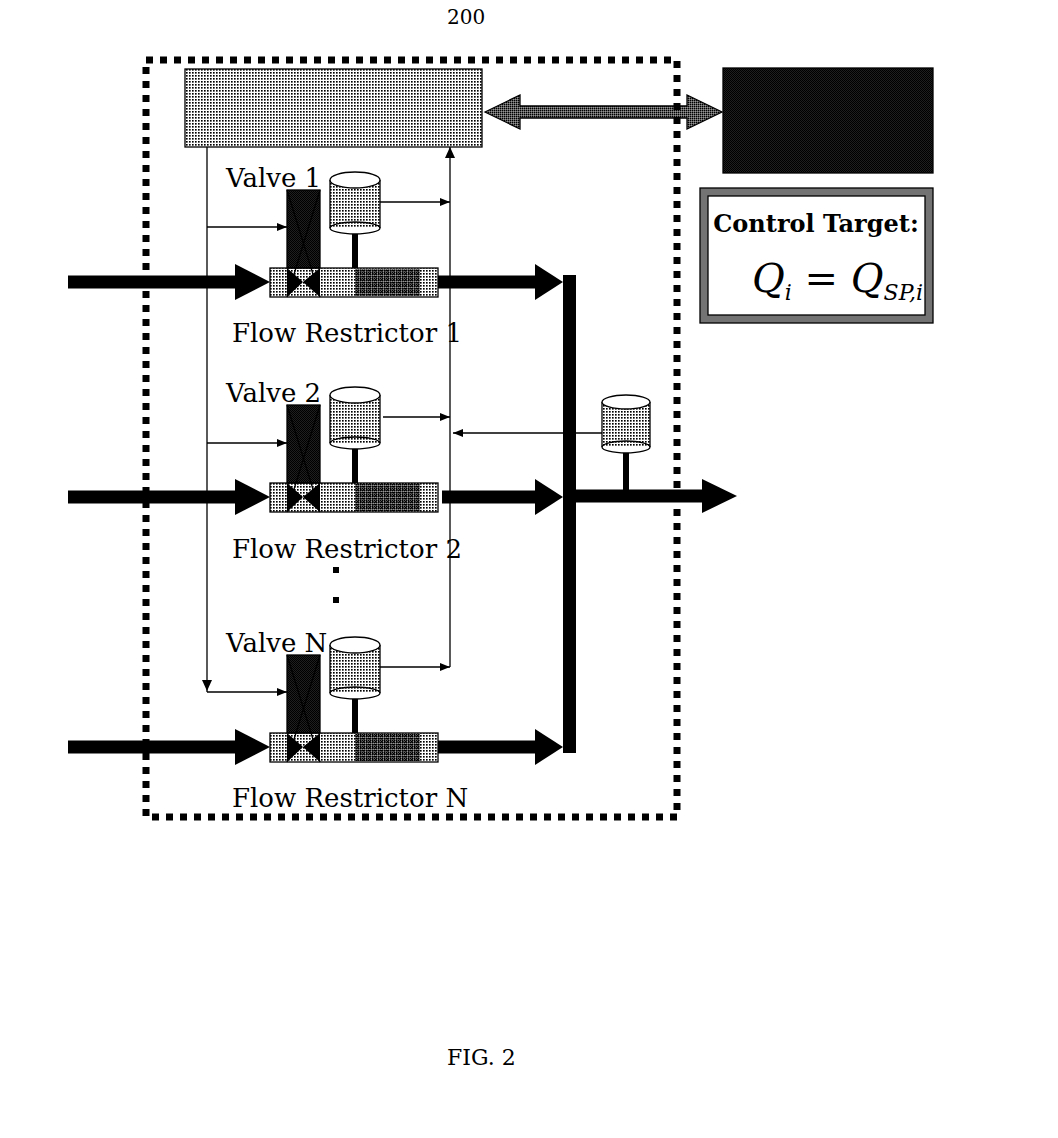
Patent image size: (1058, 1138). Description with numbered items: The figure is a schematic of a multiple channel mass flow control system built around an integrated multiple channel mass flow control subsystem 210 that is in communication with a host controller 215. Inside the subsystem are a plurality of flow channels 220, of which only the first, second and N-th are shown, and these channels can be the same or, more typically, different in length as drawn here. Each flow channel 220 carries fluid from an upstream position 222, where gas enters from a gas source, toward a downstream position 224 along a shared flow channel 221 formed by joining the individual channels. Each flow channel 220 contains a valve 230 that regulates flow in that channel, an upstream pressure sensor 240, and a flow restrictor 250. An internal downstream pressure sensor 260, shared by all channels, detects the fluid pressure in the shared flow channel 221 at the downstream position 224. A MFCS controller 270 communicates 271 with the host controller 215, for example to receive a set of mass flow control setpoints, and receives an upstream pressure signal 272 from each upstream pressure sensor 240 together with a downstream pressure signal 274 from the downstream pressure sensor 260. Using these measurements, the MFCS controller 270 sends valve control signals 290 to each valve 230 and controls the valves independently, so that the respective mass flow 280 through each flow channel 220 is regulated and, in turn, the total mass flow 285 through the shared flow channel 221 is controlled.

The integrated multiple channel mass flow control subsystem 210 is at (500, 826).
The host controller 215 is at (829, 64).
The flow channel 220 is at (496, 290).
The shared flow channel 221 is at (606, 508).
The upstream position 222 is at (69, 292).
The downstream position 224 is at (630, 501).
The valve 230 is at (287, 672).
The upstream pressure sensor 240 is at (378, 224).
The flow restrictor 250 is at (385, 291).
The downstream pressure sensor 260 is at (618, 393).
The MFCS controller 270 is at (490, 149).
The communication 271 is at (603, 103).
The upstream pressure signal 272 is at (415, 423).
The downstream pressure signal 274 is at (527, 422).
The mass flow 280 is at (545, 497).
The total mass flow 285 is at (741, 496).
The valve control signal 290 is at (206, 368).